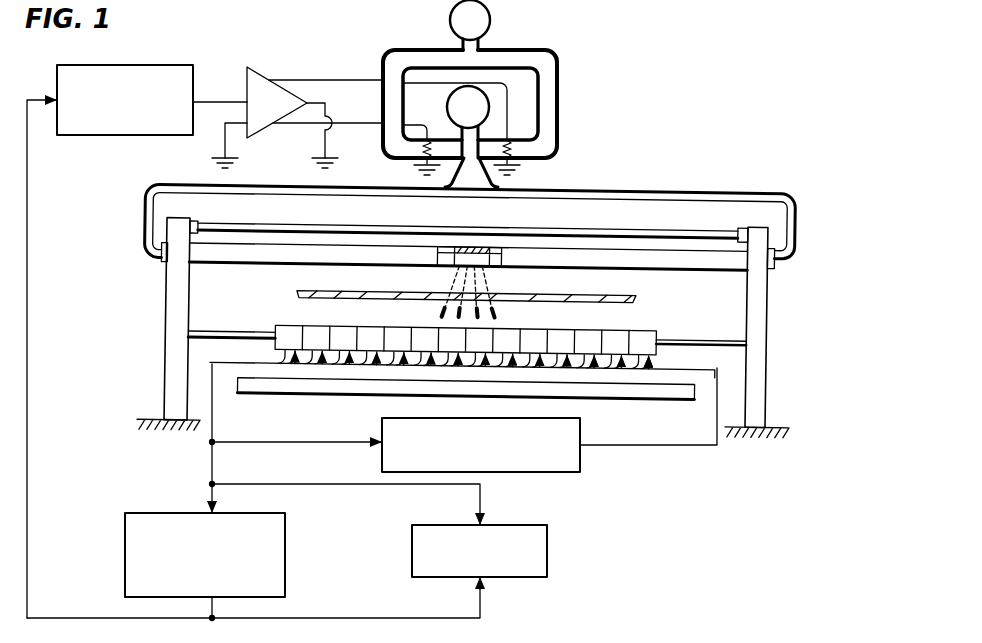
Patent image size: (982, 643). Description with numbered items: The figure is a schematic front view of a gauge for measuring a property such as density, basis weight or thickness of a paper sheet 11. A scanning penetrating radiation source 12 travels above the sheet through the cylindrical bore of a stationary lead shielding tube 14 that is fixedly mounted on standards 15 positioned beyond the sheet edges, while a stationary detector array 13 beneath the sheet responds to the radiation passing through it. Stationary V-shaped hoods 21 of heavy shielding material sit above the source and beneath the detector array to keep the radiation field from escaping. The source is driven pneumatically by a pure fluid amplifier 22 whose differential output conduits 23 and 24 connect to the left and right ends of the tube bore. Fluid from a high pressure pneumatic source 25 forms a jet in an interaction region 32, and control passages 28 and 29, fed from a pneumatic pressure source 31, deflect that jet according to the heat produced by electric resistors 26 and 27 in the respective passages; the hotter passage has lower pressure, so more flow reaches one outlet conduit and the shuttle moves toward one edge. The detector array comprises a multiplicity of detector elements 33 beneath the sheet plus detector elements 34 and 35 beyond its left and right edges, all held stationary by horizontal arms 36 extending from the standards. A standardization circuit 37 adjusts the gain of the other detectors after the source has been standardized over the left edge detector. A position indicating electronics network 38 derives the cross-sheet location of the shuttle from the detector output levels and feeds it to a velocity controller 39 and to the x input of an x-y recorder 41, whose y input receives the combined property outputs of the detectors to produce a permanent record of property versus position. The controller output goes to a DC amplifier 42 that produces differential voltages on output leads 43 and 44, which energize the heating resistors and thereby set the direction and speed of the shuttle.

The paper sheet 11 is at (298, 292).
The scanning penetrating radiation source 12 is at (492, 262).
The stationary detector array 13 is at (483, 315).
The tube 14 is at (697, 262).
The standards 15 is at (167, 320).
The V-shaped hoods 21 is at (238, 223).
The pure fluid amplifier 22 is at (493, 111).
The output conduit 23 is at (454, 190).
The output conduit 24 is at (515, 183).
The high pressure pneumatic source 25 is at (447, 107).
The electric resistor 26 is at (424, 148).
The electric resistor 27 is at (512, 150).
The control passage 28 is at (383, 106).
The control passage 29 is at (556, 103).
The pneumatic pressure source 31 is at (490, 20).
The interaction region 32 is at (472, 150).
The detector elements 33 is at (350, 326).
The detector element 34 is at (279, 325).
The detector element 35 is at (660, 334).
The horizontal arms 36 is at (205, 331).
The standardization circuit 37 is at (580, 462).
The position indicating electronics network 38 is at (285, 567).
The velocity controller 39 is at (172, 65).
The x-y recorder 41 is at (547, 555).
The DC amplifier 42 is at (252, 66).
The differential output lead 43 is at (308, 126).
The differential output lead 44 is at (334, 79).